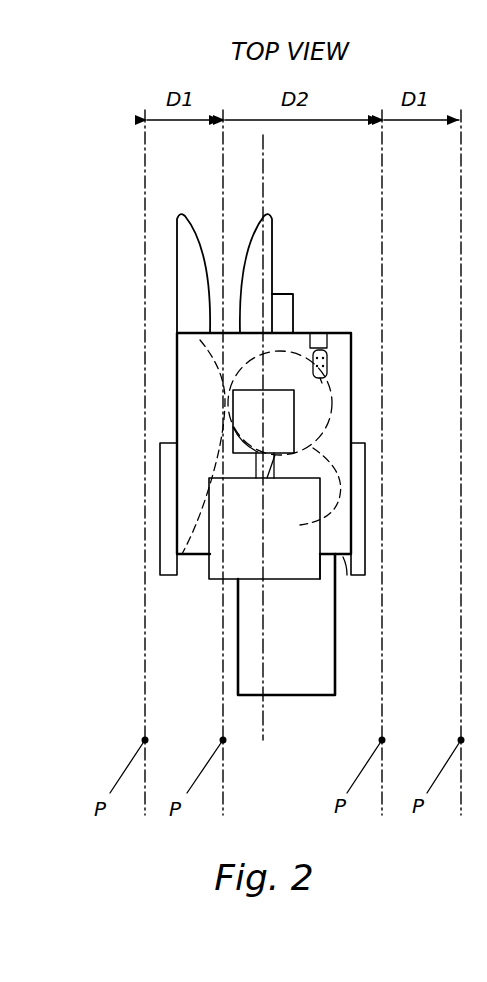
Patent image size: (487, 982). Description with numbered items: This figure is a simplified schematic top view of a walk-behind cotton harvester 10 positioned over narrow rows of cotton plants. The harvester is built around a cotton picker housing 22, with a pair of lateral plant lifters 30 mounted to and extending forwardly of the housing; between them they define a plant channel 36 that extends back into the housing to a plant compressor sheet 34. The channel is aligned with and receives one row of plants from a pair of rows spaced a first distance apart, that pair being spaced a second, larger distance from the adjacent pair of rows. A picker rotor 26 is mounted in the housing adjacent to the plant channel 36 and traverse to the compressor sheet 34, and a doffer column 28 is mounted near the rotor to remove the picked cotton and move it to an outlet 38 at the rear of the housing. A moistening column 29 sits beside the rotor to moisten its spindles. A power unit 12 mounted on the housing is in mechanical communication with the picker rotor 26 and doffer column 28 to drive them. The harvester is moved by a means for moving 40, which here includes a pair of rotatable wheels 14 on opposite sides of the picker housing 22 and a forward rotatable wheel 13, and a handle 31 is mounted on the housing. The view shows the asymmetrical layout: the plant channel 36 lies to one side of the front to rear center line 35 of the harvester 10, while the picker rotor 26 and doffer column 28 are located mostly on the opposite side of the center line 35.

The walk-behind cotton harvester 10 is at (99, 664).
The power unit 12 is at (303, 567).
The forward rotatable wheel 13 is at (293, 294).
The rotatable wheels 14 is at (368, 462).
The cotton picker housing 22 is at (353, 336).
The picker rotor 26 is at (333, 383).
The doffer column 28 is at (342, 488).
The moistening column 29 is at (337, 331).
The lateral plant lifters 30 is at (185, 270).
The handle 31 is at (307, 695).
The plant compressor sheet 34 is at (205, 362).
The center line 35 is at (263, 147).
The plant channel 36 is at (218, 237).
The outlet 38 is at (343, 557).
The means for moving 40 is at (378, 523).